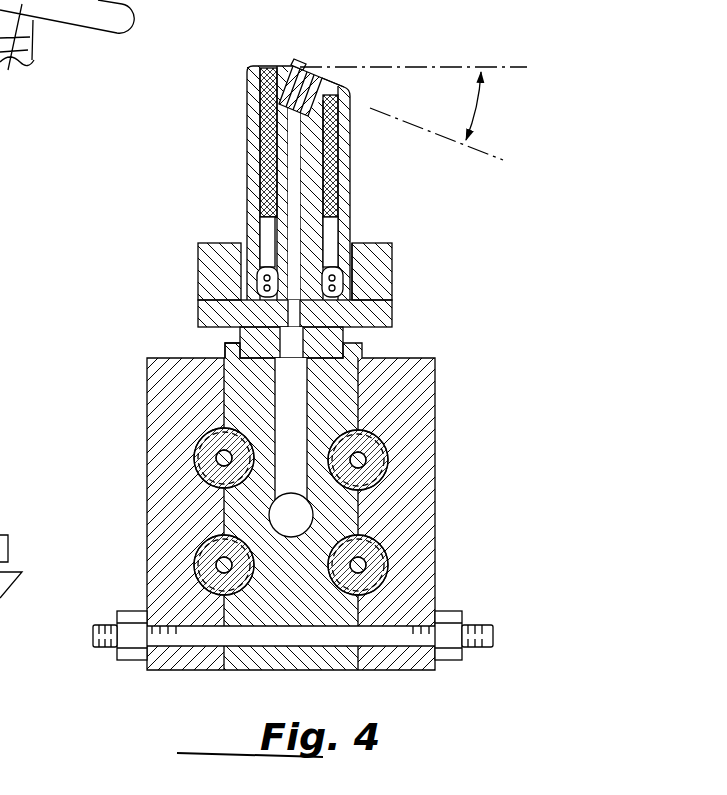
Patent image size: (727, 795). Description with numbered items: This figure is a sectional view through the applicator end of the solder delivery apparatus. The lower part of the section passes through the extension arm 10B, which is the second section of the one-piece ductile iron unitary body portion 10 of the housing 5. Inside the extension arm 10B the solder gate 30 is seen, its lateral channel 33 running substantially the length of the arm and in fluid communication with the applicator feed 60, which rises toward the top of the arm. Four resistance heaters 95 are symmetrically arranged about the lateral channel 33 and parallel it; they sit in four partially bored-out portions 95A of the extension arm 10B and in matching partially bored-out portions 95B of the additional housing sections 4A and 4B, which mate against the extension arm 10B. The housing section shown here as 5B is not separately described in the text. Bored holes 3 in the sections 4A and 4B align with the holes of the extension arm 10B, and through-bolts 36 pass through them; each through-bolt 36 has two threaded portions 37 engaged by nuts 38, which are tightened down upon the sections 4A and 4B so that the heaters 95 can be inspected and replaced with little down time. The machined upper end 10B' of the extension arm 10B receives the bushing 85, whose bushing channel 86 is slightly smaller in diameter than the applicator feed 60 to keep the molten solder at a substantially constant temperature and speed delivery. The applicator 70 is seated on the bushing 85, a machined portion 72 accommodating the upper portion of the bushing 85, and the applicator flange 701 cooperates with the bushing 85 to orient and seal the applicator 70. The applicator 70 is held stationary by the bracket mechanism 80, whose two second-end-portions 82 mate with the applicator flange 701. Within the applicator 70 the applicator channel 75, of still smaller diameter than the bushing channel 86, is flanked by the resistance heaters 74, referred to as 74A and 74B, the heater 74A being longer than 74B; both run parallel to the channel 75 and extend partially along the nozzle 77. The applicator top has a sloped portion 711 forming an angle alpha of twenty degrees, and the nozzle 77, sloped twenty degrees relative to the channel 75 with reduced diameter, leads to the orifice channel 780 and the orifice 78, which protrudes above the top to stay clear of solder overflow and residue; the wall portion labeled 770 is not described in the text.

The bored holes 3 is at (203, 640).
The housing section 4A is at (160, 529).
The housing section 4B is at (410, 589).
The housing 5 is at (247, 676).
The inner clamping jaw 5B is at (440, 437).
The unitary body portion 10 is at (313, 672).
The extension arm 10B is at (322, 503).
The upper end of extension arm 10B' is at (156, 355).
The solder gate 30 is at (318, 513).
The lateral channel 33 is at (268, 508).
The through-bolts 36 is at (92, 635).
The threaded portions 37 is at (488, 634).
The nuts 38 is at (128, 658).
The applicator feed 60 is at (310, 415).
The applicator 70 is at (362, 128).
The applicator flange 701 is at (382, 300).
The sloped portion 711 is at (322, 77).
The machined portion 72 is at (237, 335).
The resistance heaters 74 is at (255, 141).
The resistance heater 74A is at (265, 106).
The resistance heater 74B is at (338, 189).
The applicator channel 75 is at (292, 196).
The nozzle 77 is at (358, 103).
The orifice 78 is at (316, 78).
The wall portion 770 is at (258, 78).
The orifice channel 780 is at (299, 62).
The bracket mechanism 80 is at (196, 268).
The second-end-portions 82 is at (216, 254).
The bushing 85 is at (352, 332).
The bushing channel 86 is at (304, 339).
The resistance heaters 95 is at (225, 440).
The partially bored-out portions 95A is at (243, 444).
The partially bored-out portions 95B is at (200, 455).